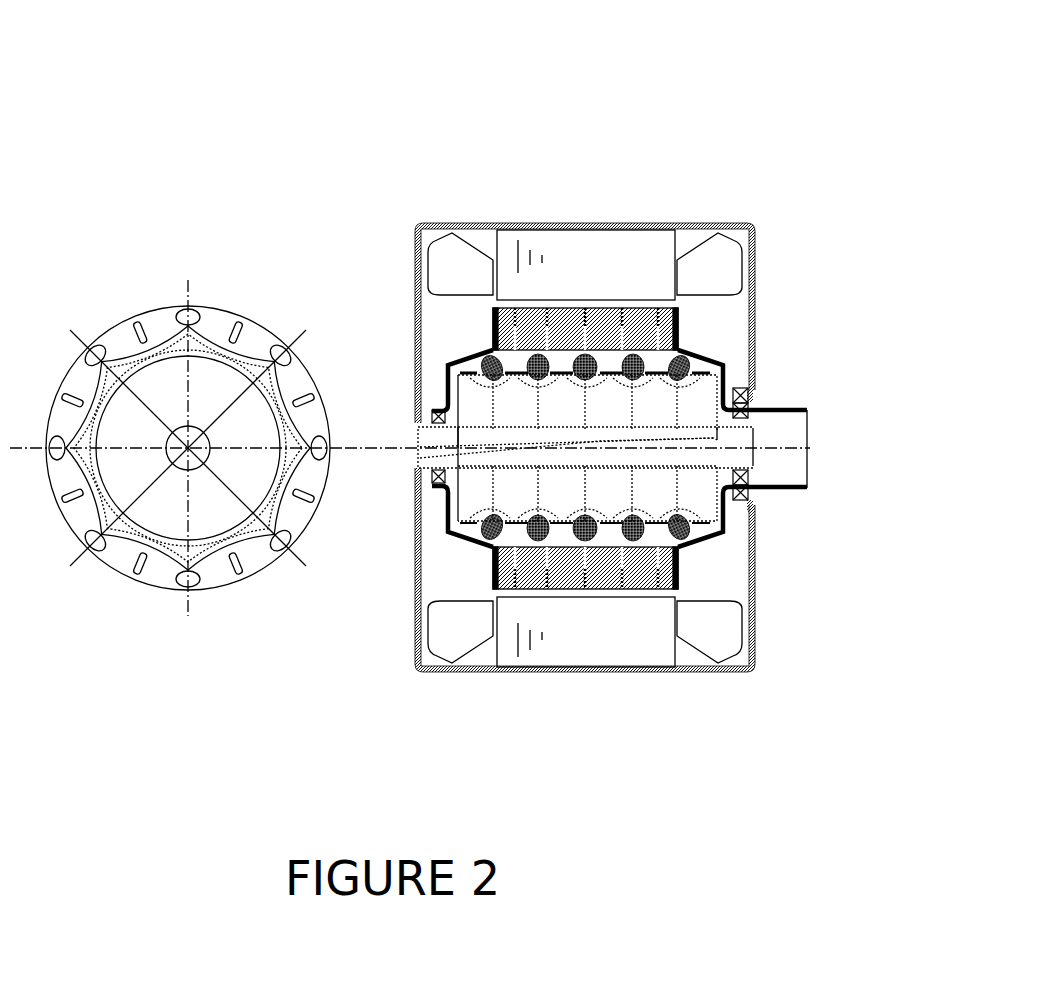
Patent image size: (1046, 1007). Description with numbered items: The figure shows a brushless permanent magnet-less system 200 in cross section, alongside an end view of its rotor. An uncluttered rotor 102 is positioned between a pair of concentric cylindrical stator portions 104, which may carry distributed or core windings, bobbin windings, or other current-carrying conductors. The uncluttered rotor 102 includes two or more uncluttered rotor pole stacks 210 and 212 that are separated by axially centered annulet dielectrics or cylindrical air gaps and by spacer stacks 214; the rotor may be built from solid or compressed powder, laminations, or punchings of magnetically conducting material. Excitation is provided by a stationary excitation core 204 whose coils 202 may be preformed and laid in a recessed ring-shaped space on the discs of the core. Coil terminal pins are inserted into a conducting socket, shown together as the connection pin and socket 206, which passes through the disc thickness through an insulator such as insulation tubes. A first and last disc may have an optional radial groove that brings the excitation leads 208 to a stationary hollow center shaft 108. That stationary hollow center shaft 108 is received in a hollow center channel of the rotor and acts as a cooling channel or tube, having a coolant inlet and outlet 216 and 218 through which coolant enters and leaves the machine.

The brushless permanent magnet-less system 200 is at (372, 62).
The uncluttered rotor 102 is at (488, 330).
The stator portions 104 is at (508, 248).
The stationary hollow center shaft 108 is at (740, 453).
The coils 202 is at (459, 530).
The stationary excitation core 204 is at (485, 483).
The connection pin and socket 206 is at (648, 357).
The excitation leads 208 is at (398, 468).
The uncluttered rotor pole stack 210 is at (506, 580).
The uncluttered rotor pole stack 212 is at (608, 583).
The spacer stacks 214 is at (583, 590).
The coolant inlet 216 is at (412, 442).
The coolant outlet 218 is at (412, 455).